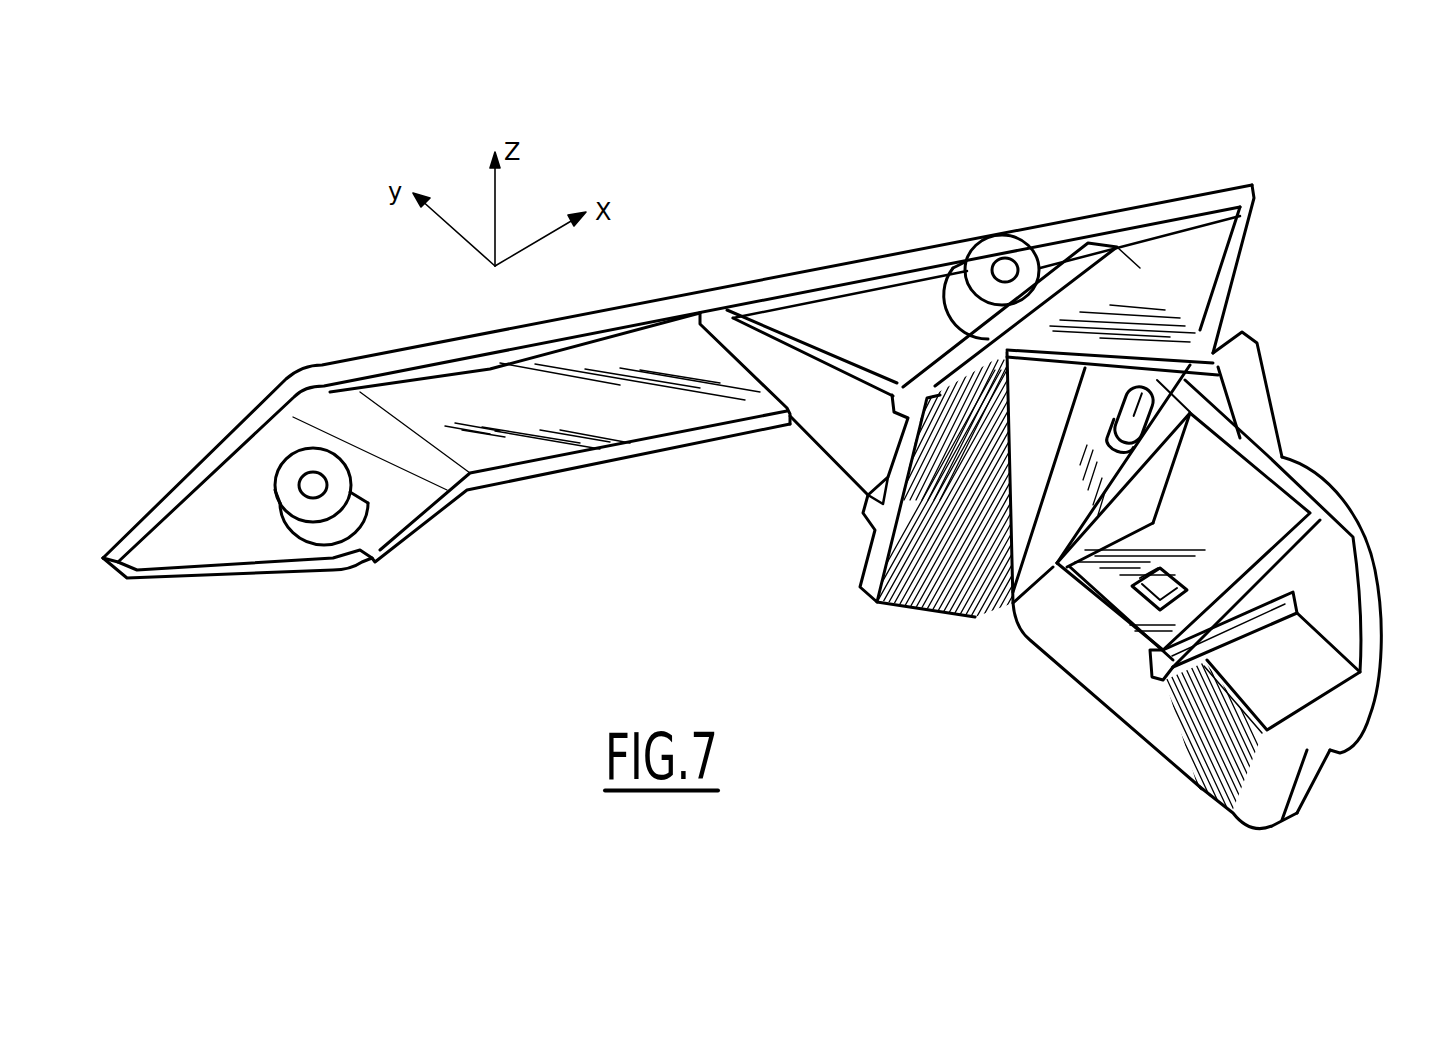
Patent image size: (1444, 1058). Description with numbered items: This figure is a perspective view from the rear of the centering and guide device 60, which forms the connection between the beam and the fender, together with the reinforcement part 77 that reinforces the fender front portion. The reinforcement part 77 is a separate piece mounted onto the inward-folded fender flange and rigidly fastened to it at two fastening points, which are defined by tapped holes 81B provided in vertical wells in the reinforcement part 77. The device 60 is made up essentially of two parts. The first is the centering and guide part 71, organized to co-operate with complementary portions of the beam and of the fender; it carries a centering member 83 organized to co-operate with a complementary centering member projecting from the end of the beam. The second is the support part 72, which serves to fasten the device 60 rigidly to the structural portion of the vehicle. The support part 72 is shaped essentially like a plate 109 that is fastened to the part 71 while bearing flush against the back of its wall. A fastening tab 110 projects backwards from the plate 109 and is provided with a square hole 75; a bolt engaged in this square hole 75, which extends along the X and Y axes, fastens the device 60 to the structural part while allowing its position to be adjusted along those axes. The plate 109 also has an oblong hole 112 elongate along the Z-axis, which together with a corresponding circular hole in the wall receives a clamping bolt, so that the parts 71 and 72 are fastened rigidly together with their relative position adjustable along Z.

The centering and guide device 60 is at (1342, 353).
The reinforcement part 77 is at (375, 363).
The tapped holes 81B is at (310, 483).
The centering and guide part 71 is at (1128, 300).
The oblong hole 112 is at (1135, 410).
The centering member 83 is at (1325, 490).
The square hole 75 is at (1160, 590).
The support part 72 is at (1078, 638).
The fastening tab 110 is at (1115, 630).
The plate 109 is at (1257, 808).